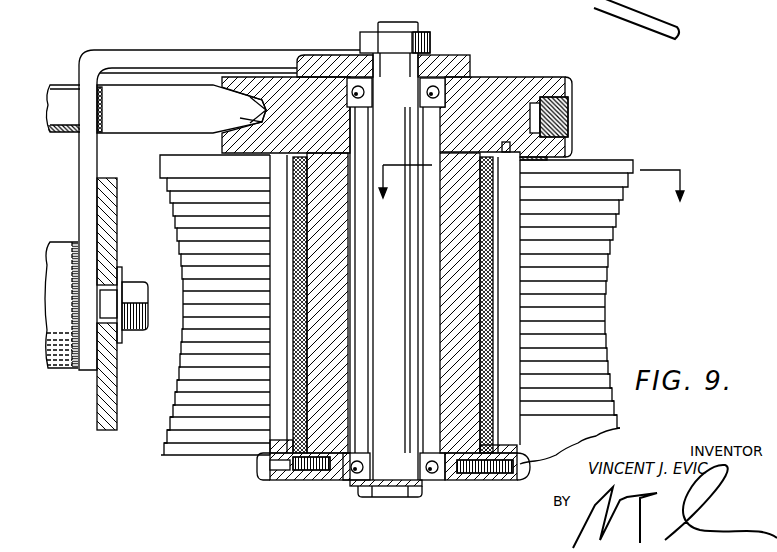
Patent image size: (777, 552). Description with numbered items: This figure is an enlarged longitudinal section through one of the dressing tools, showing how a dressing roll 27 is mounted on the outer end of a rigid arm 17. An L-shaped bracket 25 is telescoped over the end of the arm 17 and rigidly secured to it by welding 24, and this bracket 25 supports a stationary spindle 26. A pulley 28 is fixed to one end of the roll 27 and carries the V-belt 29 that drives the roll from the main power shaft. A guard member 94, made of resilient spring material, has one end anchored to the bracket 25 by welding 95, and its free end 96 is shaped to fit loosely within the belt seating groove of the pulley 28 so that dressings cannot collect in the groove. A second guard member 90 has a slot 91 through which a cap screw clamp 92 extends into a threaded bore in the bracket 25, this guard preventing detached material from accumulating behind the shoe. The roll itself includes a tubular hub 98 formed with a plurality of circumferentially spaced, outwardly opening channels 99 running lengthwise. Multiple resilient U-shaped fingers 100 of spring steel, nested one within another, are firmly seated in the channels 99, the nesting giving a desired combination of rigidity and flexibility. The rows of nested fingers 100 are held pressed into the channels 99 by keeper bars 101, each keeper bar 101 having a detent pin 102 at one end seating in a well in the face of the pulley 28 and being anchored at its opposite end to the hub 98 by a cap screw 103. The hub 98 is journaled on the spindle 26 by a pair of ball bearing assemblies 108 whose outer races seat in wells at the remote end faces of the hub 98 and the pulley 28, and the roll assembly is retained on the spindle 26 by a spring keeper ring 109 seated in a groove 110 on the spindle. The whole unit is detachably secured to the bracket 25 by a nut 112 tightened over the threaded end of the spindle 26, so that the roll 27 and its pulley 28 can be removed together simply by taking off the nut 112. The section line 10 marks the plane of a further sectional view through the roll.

The section line 10— 10 is at (532, 196).
The rigid arm 17 is at (62, 248).
The welding 24 is at (75, 372).
The L-shaped bracket 25 is at (138, 53).
The stationary spindle 26 is at (480, 104).
The dressing roll 27 is at (616, 158).
The pulley 28 is at (530, 82).
The V-belt 29 is at (562, 107).
The guard member 90 is at (117, 393).
The slot 91 is at (119, 293).
The cap screw clamp 92 is at (148, 317).
The guard member 94 is at (181, 109).
The welding 95 is at (100, 135).
The free end 96 is at (252, 107).
The tubular hub 98 is at (332, 478).
The channel 99 is at (312, 471).
The resilient U-shaped finger 100 is at (178, 448).
The keeper bar 101 is at (272, 410).
The detent pin 102 is at (262, 123).
The cap screw 103 is at (258, 471).
The ball bearing assembly 108 is at (350, 78).
The spring keeper ring 109 is at (360, 481).
The groove 110 is at (392, 498).
The nut 112 is at (427, 38).